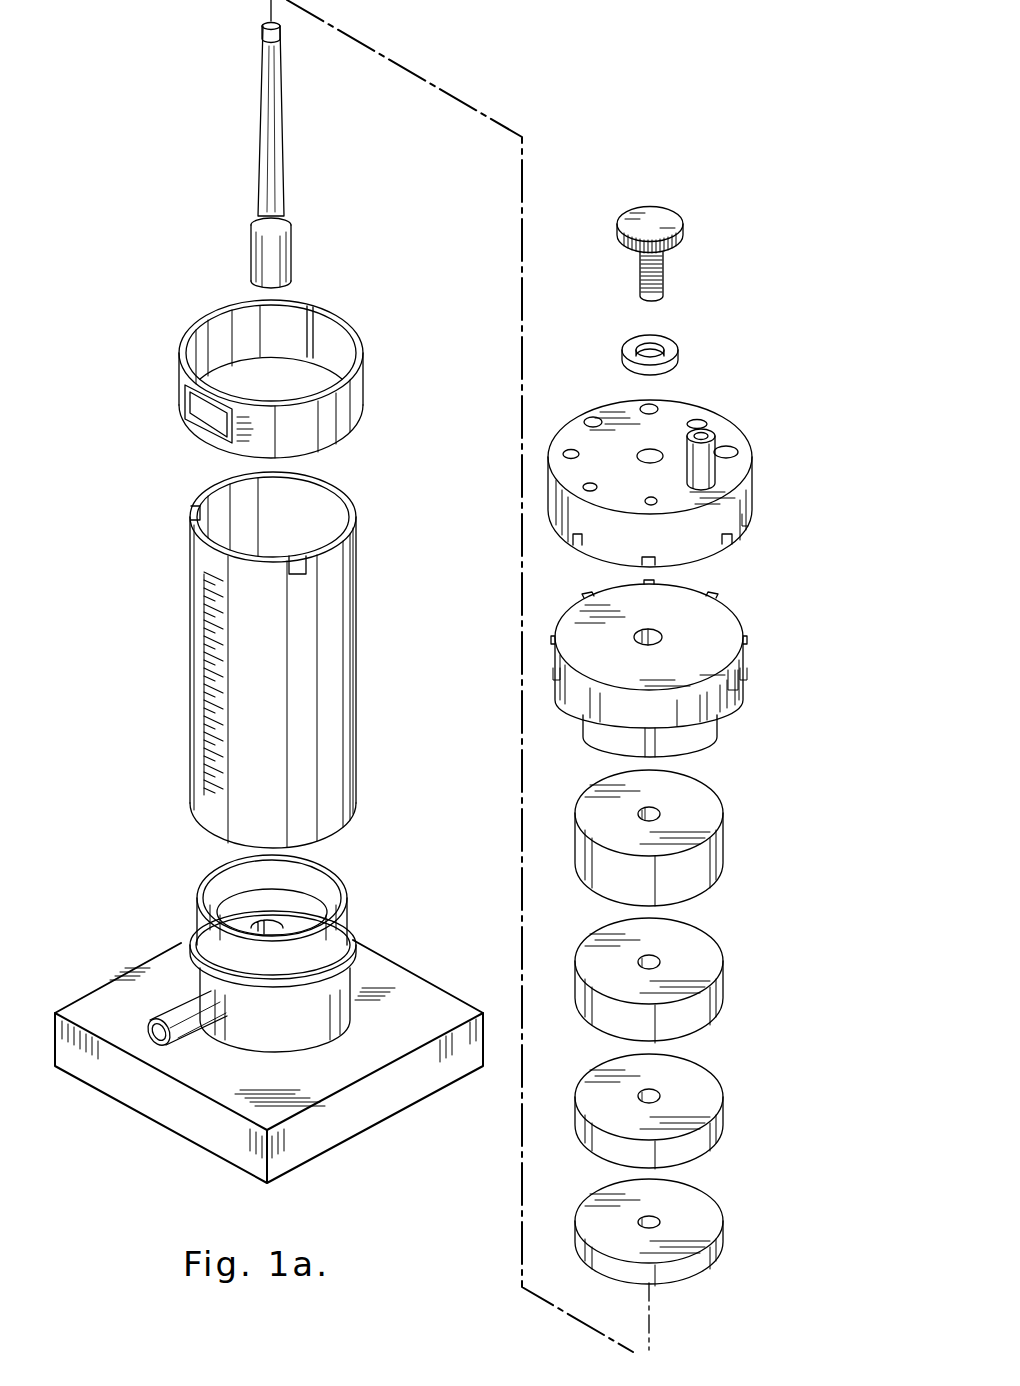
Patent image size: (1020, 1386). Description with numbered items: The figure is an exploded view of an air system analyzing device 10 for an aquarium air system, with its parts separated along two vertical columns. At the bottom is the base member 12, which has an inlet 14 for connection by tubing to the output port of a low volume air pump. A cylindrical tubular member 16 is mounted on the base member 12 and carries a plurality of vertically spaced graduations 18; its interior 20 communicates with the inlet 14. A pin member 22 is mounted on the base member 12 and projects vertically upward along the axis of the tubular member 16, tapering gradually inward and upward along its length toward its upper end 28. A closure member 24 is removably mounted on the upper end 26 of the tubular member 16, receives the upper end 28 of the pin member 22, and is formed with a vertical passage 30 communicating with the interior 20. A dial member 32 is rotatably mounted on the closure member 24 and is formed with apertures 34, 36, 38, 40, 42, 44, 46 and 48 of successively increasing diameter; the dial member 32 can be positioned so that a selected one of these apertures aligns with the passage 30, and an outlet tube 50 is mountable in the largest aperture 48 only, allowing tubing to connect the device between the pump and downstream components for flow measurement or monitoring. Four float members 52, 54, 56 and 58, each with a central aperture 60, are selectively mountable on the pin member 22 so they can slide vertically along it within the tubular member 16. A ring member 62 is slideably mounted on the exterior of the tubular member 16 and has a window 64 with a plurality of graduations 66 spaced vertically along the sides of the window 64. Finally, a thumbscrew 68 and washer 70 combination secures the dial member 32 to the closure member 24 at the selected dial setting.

The air system analyzing device 10 is at (787, 265).
The base member 12 is at (264, 953).
The inlet 14 is at (175, 1003).
The cylindrical tubular member 16 is at (274, 651).
The graduations 18 is at (205, 676).
The interior 20 is at (306, 502).
The pin member 22 is at (269, 154).
The closure member 24 is at (667, 668).
The upper end 26 is at (192, 513).
The upper end 28 is at (262, 33).
The vertical passage 30 is at (737, 664).
The dial member 32 is at (662, 471).
The aperture 34 is at (657, 506).
The aperture 36 is at (582, 492).
The aperture 38 is at (570, 448).
The aperture 40 is at (594, 416).
The aperture 42 is at (647, 403).
The aperture 44 is at (696, 419).
The aperture 46 is at (710, 420).
The aperture 48 is at (743, 522).
The outlet tube 50 is at (713, 432).
The float member 52 is at (723, 1236).
The float member 54 is at (724, 1117).
The float member 56 is at (725, 990).
The float member 58 is at (725, 840).
The central aperture 60 is at (657, 810).
The ring member 62 is at (276, 387).
The window 64 is at (185, 416).
The graduations 66 is at (245, 445).
The thumbscrew 68 is at (666, 210).
The washer 70 is at (672, 352).